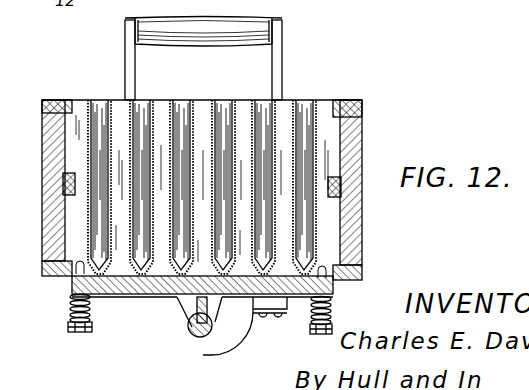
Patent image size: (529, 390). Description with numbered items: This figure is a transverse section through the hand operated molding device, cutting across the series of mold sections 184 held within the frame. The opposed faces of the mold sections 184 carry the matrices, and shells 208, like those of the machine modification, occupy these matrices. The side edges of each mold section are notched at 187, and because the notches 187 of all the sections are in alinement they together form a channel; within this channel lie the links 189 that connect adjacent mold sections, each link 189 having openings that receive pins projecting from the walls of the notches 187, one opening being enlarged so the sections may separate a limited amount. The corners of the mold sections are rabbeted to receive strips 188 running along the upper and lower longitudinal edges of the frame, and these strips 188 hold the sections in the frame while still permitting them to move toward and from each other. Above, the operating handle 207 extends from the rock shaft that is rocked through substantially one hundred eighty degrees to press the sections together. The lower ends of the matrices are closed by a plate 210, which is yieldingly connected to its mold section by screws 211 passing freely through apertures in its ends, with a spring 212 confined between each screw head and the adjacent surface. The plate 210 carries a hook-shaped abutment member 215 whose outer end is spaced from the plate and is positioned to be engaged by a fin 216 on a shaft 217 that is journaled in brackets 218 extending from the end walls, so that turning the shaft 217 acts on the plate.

The mold section 184 is at (200, 108).
The notch 187 is at (352, 151).
The strip 188 is at (354, 107).
The link 189 is at (345, 196).
The operating handle 207 is at (248, 25).
The shell 208 is at (145, 108).
The plate 210 is at (165, 297).
The screw 211 is at (92, 327).
The spring 212 is at (68, 305).
The hook-shaped abutment member 215 is at (228, 344).
The fin 216 is at (186, 311).
The shaft 217 is at (201, 338).
The bracket 218 is at (213, 315).